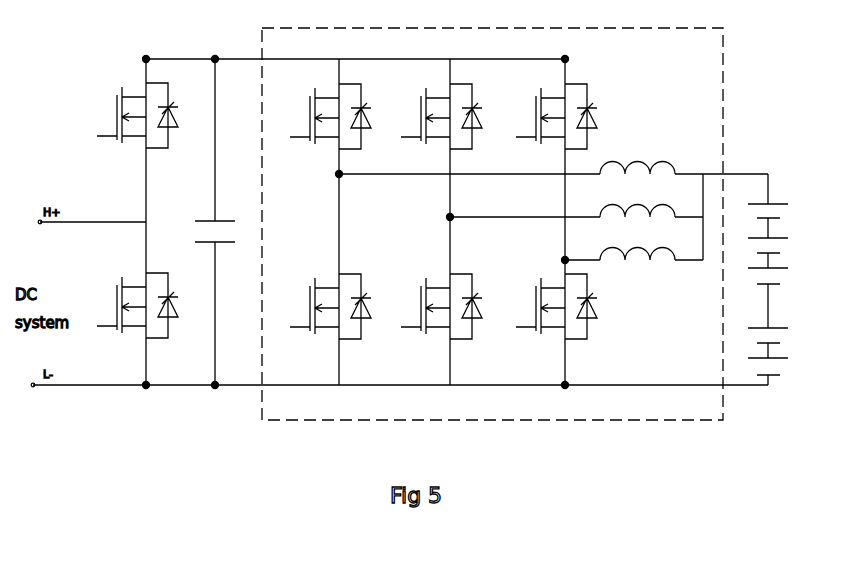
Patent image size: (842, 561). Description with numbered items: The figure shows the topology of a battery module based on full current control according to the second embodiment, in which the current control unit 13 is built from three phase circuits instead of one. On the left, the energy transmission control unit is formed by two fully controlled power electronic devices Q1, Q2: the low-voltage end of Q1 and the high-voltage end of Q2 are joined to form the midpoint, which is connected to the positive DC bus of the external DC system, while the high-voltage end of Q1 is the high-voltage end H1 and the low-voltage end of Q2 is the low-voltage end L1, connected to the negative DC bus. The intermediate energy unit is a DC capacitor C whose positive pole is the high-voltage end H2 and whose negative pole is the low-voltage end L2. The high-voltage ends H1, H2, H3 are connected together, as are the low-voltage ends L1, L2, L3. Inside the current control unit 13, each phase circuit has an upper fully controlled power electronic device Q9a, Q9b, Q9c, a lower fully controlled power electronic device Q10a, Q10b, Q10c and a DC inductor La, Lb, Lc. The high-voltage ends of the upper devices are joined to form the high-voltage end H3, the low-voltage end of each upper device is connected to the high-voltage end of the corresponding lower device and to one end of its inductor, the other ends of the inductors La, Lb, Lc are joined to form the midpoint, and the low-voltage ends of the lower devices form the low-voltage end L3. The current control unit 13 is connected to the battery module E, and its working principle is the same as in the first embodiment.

The current control unit 13 is at (470, 410).
The fully controlled power electronic device Q1 is at (126, 115).
The fully controlled power electronic device Q2 is at (123, 305).
The upper fully controlled power electronic device Q9a is at (320, 116).
The upper fully controlled power electronic device Q9b is at (434, 116).
The upper fully controlled power electronic device Q9c is at (548, 116).
The lower fully controlled power electronic device Q10a is at (319, 306).
The lower fully controlled power electronic device Q10b is at (431, 306).
The lower fully controlled power electronic device Q10c is at (545, 306).
The DC capacitor C is at (221, 231).
The DC inductor La is at (637, 157).
The DC inductor Lb is at (637, 202).
The DC inductor Lc is at (637, 264).
The battery module E is at (776, 294).
The high-voltage end of energy transmission control unit H1 is at (144, 50).
The high-voltage end of intermediate energy unit H2 is at (213, 50).
The high-voltage end of current control unit H3 is at (563, 50).
The low-voltage end of energy transmission control unit L1 is at (144, 399).
The low-voltage end of intermediate energy unit L2 is at (213, 399).
The low-voltage end of current control unit L3 is at (563, 399).